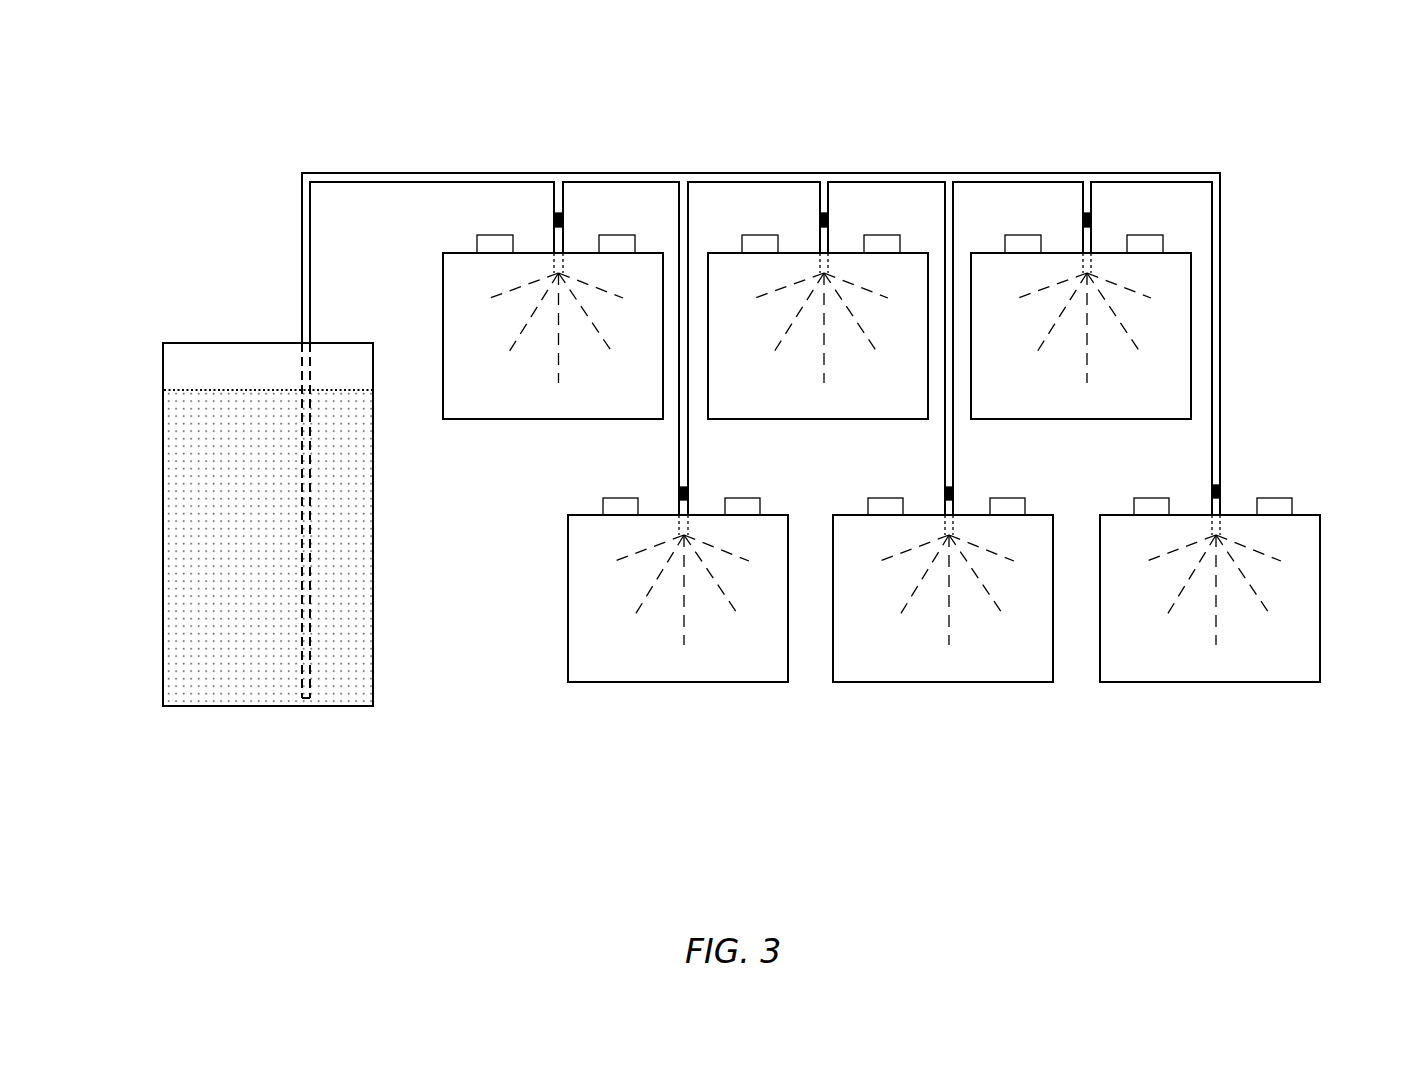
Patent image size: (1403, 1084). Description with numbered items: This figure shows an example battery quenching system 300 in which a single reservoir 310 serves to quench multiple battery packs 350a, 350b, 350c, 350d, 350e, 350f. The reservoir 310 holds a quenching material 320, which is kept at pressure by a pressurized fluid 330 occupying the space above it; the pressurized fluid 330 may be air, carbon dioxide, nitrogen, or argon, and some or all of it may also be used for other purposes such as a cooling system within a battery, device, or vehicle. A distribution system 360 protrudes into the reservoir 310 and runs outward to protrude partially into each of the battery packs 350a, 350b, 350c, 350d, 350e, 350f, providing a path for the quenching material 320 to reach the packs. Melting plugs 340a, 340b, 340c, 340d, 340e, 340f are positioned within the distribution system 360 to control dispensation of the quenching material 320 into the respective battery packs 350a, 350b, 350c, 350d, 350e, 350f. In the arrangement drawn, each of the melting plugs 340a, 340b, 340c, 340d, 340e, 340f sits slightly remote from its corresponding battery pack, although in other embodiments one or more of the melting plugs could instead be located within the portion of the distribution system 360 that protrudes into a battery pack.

The battery quenching system 300 is at (1303, 83).
The reservoir 310 is at (163, 343).
The quenching material 320 is at (213, 552).
The pressurized fluid 330 is at (334, 365).
The distribution system 360 is at (655, 179).
The melting plug 340a is at (554, 219).
The melting plug 340b is at (820, 219).
The melting plug 340c is at (1083, 219).
The melting plug 340d is at (679, 492).
The melting plug 340e is at (945, 492).
The melting plug 340f is at (1212, 490).
The battery pack 350a is at (494, 411).
The battery pack 350b is at (759, 411).
The battery pack 350c is at (1022, 411).
The battery pack 350d is at (621, 673).
The battery pack 350e is at (886, 673).
The battery pack 350f is at (1150, 673).